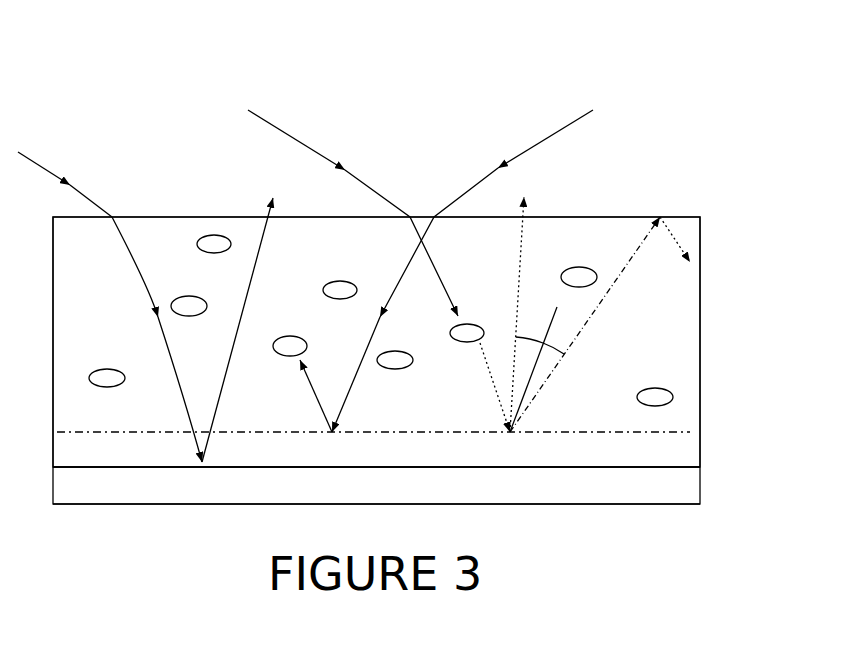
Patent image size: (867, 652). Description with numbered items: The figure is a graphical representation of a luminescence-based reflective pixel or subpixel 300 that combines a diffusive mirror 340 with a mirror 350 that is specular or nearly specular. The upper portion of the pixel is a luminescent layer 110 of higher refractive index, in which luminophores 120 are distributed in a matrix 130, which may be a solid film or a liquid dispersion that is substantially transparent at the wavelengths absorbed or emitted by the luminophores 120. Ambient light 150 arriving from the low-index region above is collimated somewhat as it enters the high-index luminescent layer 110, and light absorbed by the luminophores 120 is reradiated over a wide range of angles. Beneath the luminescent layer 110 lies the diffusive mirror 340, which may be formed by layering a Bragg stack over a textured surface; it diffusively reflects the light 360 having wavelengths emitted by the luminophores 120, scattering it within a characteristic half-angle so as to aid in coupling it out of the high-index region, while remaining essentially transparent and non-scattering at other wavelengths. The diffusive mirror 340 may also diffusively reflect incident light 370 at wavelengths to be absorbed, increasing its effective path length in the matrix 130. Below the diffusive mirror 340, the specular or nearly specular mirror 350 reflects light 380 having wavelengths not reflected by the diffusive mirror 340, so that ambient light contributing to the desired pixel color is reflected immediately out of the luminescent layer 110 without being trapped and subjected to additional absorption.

The luminescence-based reflective pixel 300 is at (213, 58).
The luminescent layer 110 is at (713, 307).
The luminophore 120 is at (453, 335).
The matrix 130 is at (128, 336).
The ambient light 150 is at (56, 172).
The diffusive mirror 340 is at (682, 452).
The specular or nearly specular mirror 350 is at (682, 487).
The light having wavelengths emitted by the luminophores 360 is at (487, 373).
The incident light 370 is at (305, 378).
The light having wavelengths not reflected by the diffusive mirror 380 is at (257, 268).